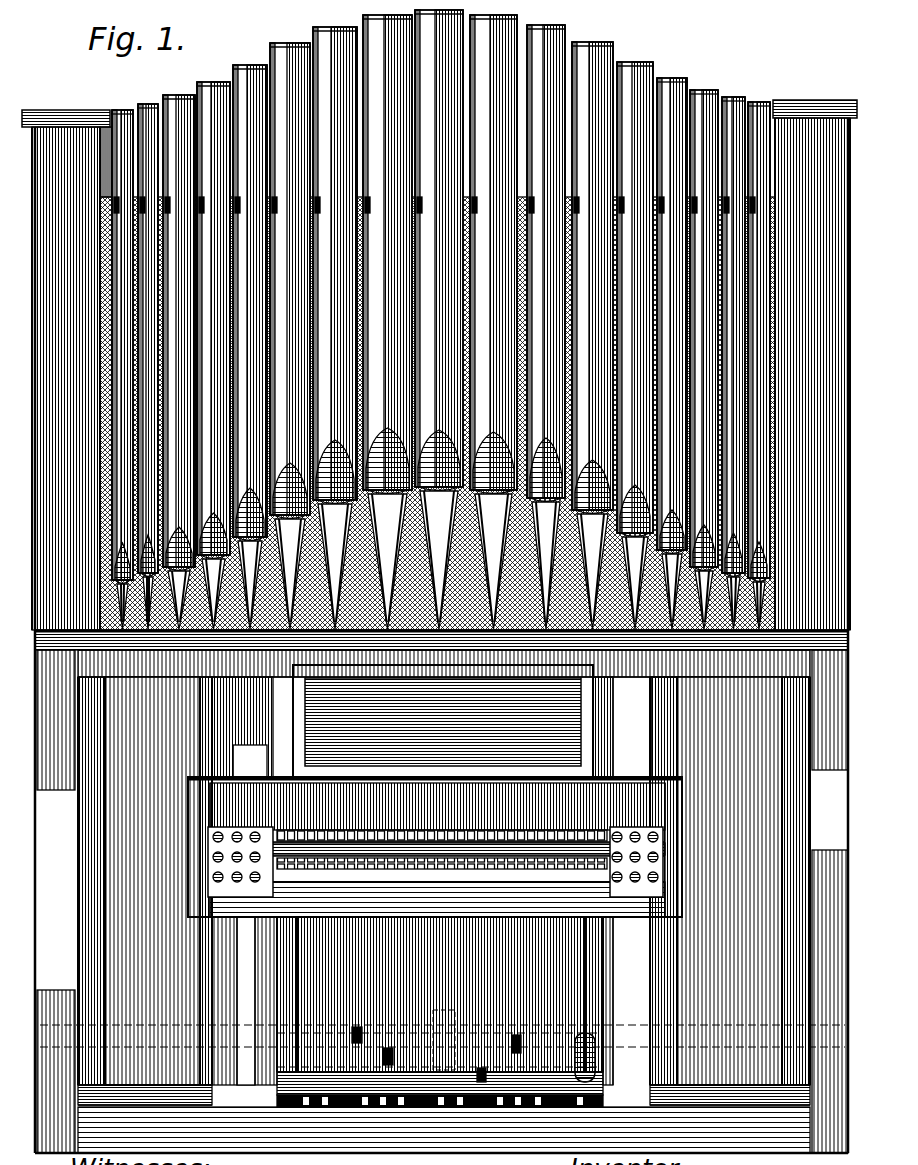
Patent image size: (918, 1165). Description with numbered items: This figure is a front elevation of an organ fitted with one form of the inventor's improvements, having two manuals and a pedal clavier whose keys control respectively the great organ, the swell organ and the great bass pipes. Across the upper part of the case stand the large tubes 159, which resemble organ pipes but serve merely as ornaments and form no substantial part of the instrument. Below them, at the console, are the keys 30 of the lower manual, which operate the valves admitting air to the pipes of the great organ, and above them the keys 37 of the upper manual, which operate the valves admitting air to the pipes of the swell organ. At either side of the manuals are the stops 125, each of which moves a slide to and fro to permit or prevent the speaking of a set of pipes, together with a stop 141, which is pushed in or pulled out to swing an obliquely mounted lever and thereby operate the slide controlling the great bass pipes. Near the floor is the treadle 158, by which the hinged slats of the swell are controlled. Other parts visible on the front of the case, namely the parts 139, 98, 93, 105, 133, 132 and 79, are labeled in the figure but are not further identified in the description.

The large tubes 159 is at (487, 120).
The stop 125 is at (653, 832).
The keys of the upper manual 37 is at (538, 831).
The keys of the lower manual 30 is at (397, 870).
The key slip 139 is at (437, 899).
The stop knob 98 is at (213, 878).
The stop knob 93 is at (236, 880).
The stop knob 105 is at (255, 881).
The stop 141 is at (651, 880).
The pedal frame 133 is at (655, 1040).
The combination pedals 132 is at (481, 1068).
The treadle 158 is at (566, 1057).
The pedal keys 79 is at (383, 1108).